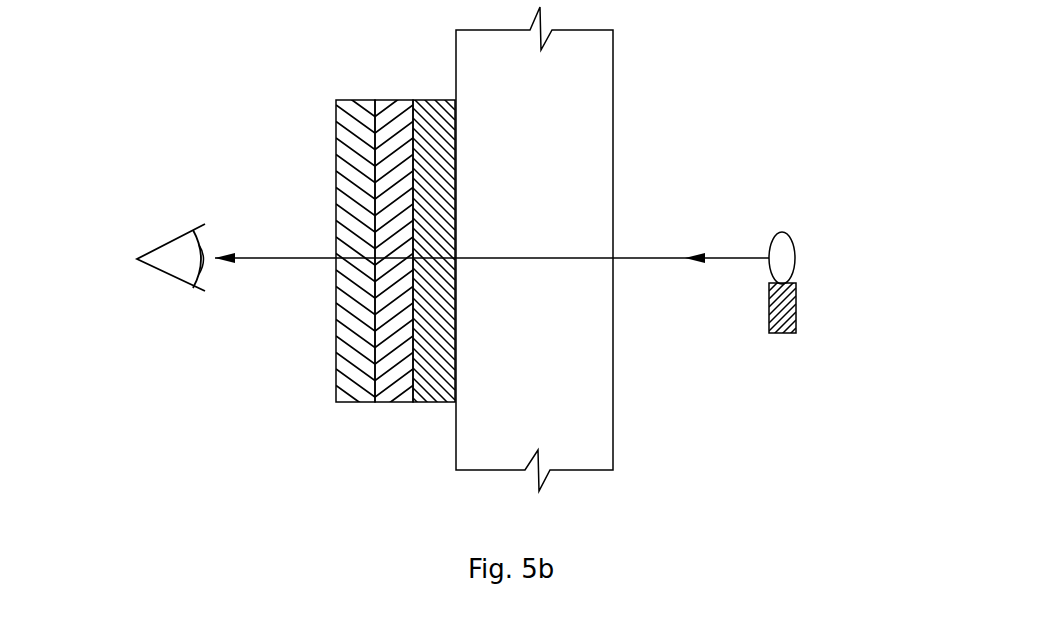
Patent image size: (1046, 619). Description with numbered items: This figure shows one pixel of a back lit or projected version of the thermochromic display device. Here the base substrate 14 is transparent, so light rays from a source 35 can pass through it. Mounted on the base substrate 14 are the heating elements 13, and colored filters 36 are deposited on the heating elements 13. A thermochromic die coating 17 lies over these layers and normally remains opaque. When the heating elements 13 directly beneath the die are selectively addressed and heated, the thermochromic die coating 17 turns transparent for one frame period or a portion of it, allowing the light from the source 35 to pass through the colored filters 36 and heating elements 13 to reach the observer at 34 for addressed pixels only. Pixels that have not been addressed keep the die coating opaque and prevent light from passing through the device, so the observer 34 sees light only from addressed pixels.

The heating elements 13 is at (430, 405).
The base substrate 14 is at (613, 128).
The thermochromic die coating 17 is at (355, 405).
The observer 34 is at (173, 277).
The source 35 is at (785, 228).
The colored filters 36 is at (393, 405).